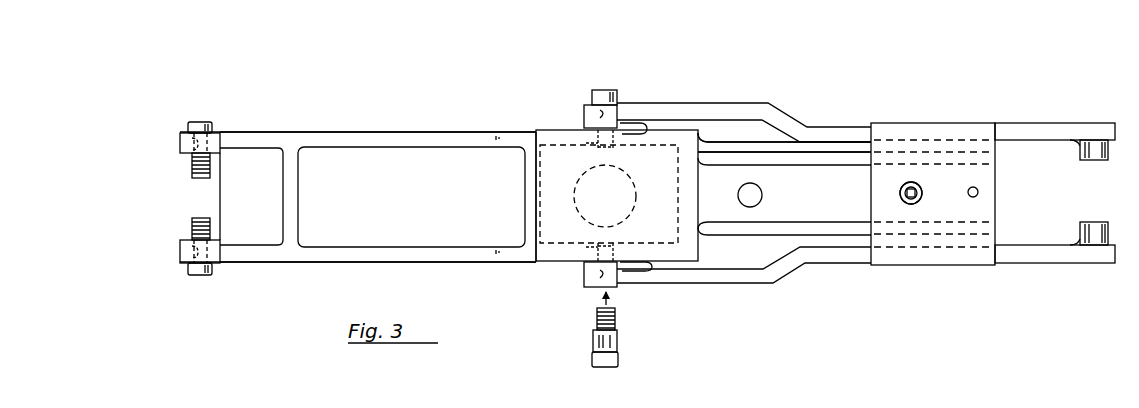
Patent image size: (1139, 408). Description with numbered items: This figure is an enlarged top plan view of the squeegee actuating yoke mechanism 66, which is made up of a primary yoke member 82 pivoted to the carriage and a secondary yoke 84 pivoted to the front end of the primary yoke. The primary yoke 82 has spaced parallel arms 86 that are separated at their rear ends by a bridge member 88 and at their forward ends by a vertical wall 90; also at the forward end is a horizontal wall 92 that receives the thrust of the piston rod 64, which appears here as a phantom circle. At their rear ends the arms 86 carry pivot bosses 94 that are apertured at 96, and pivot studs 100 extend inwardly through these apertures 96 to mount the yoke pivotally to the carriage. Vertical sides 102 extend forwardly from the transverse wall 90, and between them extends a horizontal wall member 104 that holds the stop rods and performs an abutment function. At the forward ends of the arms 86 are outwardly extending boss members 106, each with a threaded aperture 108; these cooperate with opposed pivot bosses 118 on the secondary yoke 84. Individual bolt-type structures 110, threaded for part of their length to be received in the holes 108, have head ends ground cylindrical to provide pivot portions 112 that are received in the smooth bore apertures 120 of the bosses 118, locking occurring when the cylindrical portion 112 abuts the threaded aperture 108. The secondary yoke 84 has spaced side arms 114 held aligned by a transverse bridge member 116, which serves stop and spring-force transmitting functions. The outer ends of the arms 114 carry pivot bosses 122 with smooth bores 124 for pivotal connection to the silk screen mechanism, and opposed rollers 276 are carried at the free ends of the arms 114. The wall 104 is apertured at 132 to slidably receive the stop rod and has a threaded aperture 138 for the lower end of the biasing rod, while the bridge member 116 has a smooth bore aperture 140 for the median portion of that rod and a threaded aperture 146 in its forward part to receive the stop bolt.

The mechanism 66 is at (543, 50).
The primary yoke member 82 is at (297, 117).
The secondary yoke 84 is at (838, 115).
The spaced parallel arms 86 is at (358, 140).
The bridge member 88 is at (303, 188).
The vertical wall 90 is at (705, 142).
The horizontal wall 92 is at (570, 180).
The pivot bosses 94 is at (215, 153).
The apertures 96 is at (208, 142).
The pivot studs 100 is at (200, 122).
The vertical sides 102 is at (797, 155).
The horizontal wall member 104 is at (827, 199).
The boss members 106 is at (622, 130).
The threaded apertures 108 is at (582, 144).
The bolt-type structures 110 is at (624, 357).
The pivot portions 112 is at (617, 342).
The spaced side arms 114 is at (746, 106).
The transverse bridge member 116 is at (958, 207).
The pivot bosses 118 is at (585, 116).
The smooth bore apertures 120 is at (585, 108).
The pivot bosses 122 is at (1075, 143).
The smooth bores 124 is at (1098, 124).
The aperture 132 is at (744, 187).
The threaded aperture 138 is at (900, 195).
The smooth bore aperture 140 is at (915, 188).
The threaded aperture 146 is at (977, 188).
The opposed rollers 276 is at (1076, 160).
The piston rod 64 is at (637, 186).